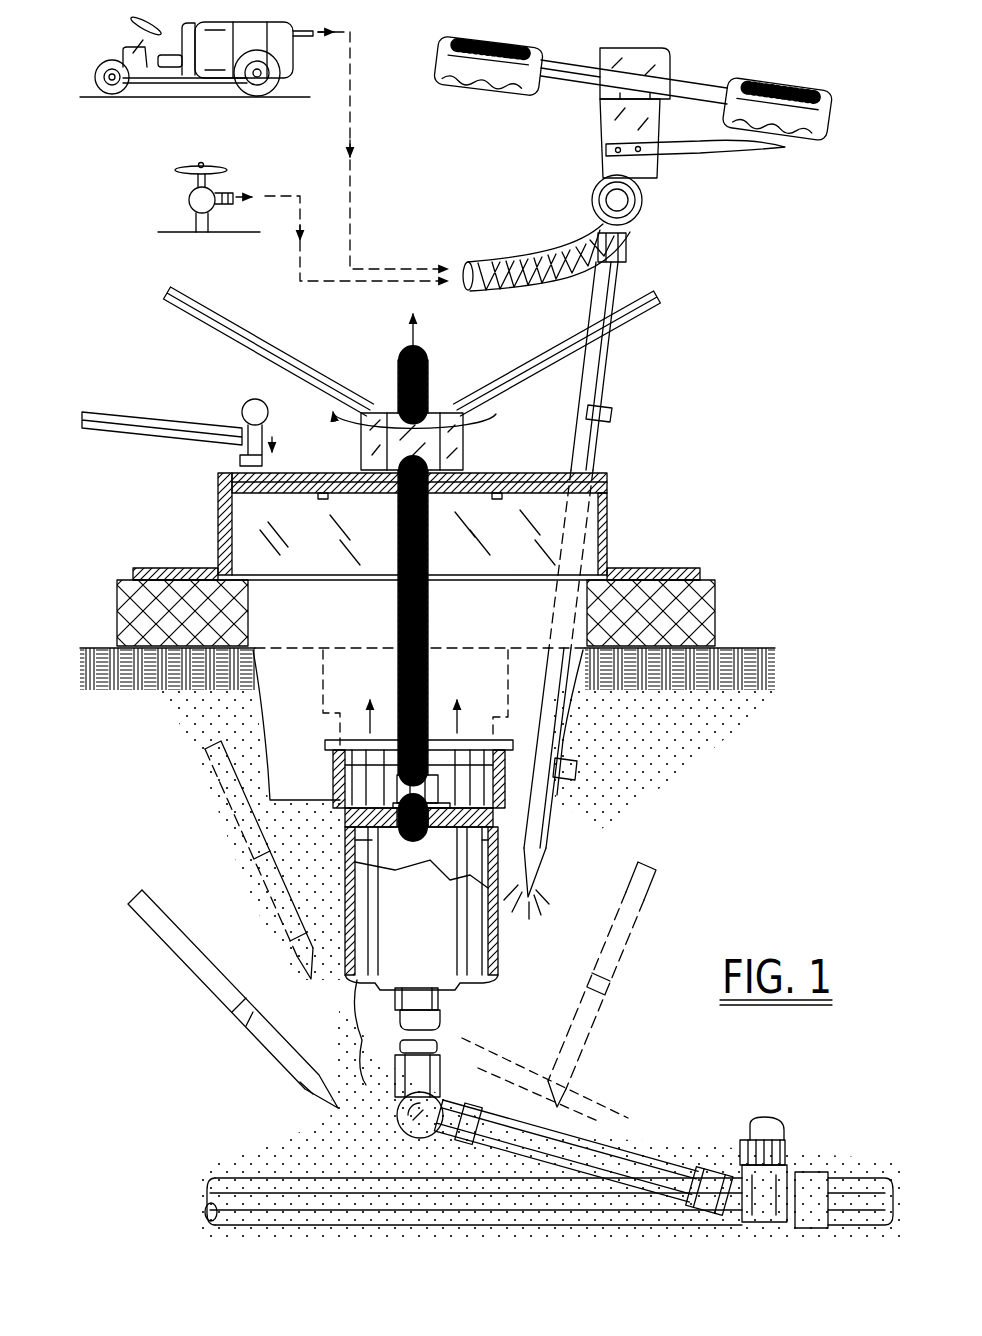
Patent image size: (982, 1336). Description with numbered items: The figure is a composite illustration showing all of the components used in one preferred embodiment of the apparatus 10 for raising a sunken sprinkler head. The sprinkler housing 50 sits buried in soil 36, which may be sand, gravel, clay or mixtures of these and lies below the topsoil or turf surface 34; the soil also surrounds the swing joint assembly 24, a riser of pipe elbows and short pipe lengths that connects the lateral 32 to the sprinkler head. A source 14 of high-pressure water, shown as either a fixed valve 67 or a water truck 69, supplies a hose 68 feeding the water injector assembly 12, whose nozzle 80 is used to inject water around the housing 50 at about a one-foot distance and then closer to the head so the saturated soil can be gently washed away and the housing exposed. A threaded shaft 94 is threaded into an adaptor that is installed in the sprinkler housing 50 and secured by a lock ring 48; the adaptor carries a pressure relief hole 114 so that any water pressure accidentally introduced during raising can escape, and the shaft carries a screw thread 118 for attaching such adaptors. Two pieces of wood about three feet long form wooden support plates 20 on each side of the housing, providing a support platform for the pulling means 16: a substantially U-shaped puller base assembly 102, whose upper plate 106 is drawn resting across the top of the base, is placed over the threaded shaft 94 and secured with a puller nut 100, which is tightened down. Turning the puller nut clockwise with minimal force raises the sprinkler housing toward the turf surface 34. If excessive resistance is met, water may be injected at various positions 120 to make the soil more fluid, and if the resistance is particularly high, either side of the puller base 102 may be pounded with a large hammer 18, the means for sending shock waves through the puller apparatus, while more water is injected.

The apparatus 10 is at (678, 357).
The means for injecting water into the ground 12 is at (664, 185).
The source of high-pressure water 14 is at (264, 147).
The means for pulling the sprinkler head assembly 16 is at (447, 373).
The means for causing shock waves / large hammer 18 is at (150, 414).
The wooden support plates 20 is at (108, 580).
The swing joint assembly 24 is at (628, 1112).
The lateral 32 is at (308, 1177).
The topsoil / turf surface 34 is at (777, 665).
The soil 36 is at (622, 731).
The lock ring 48 is at (365, 790).
The sprinkler housing 50 is at (452, 952).
The fixed valve 67 is at (188, 200).
The hose 68 is at (532, 248).
The water truck 69 is at (297, 64).
The injector assembly nozzle 80 is at (545, 850).
The threaded shaft 94 is at (431, 620).
The puller nut 100 is at (262, 344).
The puller base assembly 102 is at (216, 496).
The top plate 106 is at (487, 472).
The pressure relief hole 114 is at (380, 824).
The screw thread 118 is at (404, 820).
The water injection positions 120 is at (226, 878).